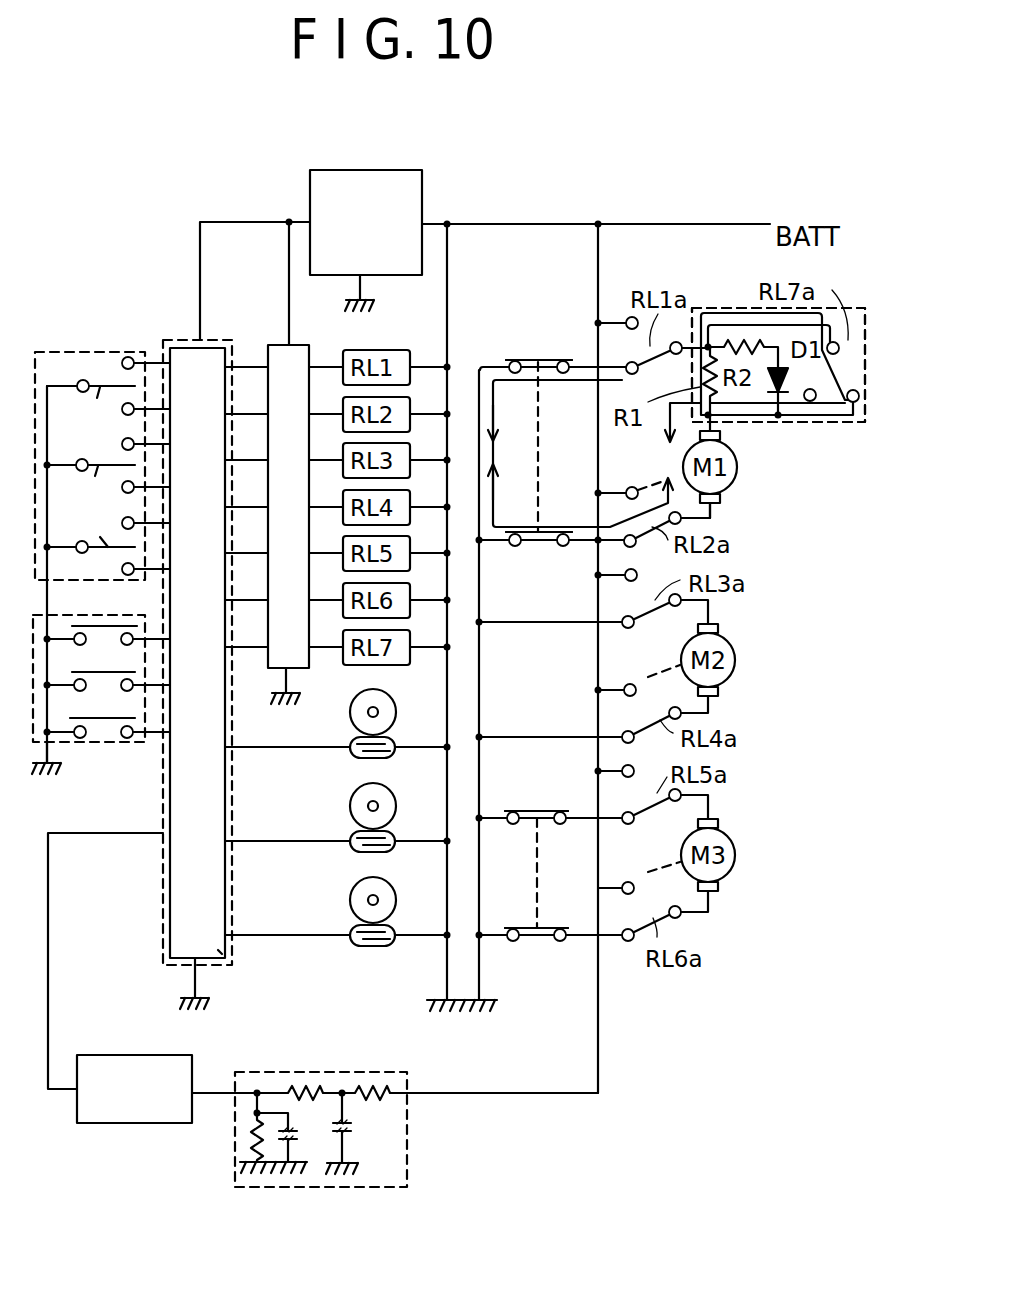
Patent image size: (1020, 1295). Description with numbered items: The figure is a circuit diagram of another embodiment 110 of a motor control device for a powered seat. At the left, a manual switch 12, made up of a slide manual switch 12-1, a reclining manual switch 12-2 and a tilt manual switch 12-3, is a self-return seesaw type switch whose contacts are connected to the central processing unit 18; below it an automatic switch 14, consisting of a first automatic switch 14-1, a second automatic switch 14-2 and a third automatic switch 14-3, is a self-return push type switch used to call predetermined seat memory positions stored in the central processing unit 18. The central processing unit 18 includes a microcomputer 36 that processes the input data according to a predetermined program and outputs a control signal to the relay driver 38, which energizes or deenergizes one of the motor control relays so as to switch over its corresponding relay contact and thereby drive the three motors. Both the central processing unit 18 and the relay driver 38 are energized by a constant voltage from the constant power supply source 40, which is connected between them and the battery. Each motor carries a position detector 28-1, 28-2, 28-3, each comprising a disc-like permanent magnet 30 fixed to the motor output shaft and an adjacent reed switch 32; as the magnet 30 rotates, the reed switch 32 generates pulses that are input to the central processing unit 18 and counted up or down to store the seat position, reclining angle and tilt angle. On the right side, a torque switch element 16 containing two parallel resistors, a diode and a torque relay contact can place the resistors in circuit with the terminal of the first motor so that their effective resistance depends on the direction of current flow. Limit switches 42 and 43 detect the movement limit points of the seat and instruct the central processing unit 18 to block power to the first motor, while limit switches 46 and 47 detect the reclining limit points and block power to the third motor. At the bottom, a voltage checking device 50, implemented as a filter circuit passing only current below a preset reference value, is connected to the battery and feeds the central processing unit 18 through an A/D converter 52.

The another embodiment 110 is at (121, 243).
The manual switch 12 is at (63, 350).
The slide manual switch 12-1 is at (91, 406).
The reclining manual switch 12-2 is at (90, 482).
The tilt manual switch 12-3 is at (90, 536).
The automatic switch 14 is at (95, 745).
The first automatic switch 14-1 is at (88, 626).
The second automatic switch 14-2 is at (115, 672).
The third automatic switch 14-3 is at (118, 718).
The torque switch element 16 is at (800, 424).
The central processing unit 18 is at (163, 925).
The position detector 28-1 is at (331, 729).
The position detector 28-2 is at (329, 815).
The position detector 28-3 is at (328, 917).
The permanent magnet 30 is at (392, 698).
The reed switch 32 is at (395, 742).
The microcomputer 36 is at (220, 948).
The relay driver 38 is at (278, 345).
The constant power supply source 40 is at (422, 185).
The limit switch 42 is at (533, 358).
The limit switch 43 is at (530, 546).
The limit switch 46 is at (525, 808).
The limit switch 47 is at (545, 945).
The voltage checking device 50 is at (407, 1153).
The A/D converter 52 is at (147, 1125).